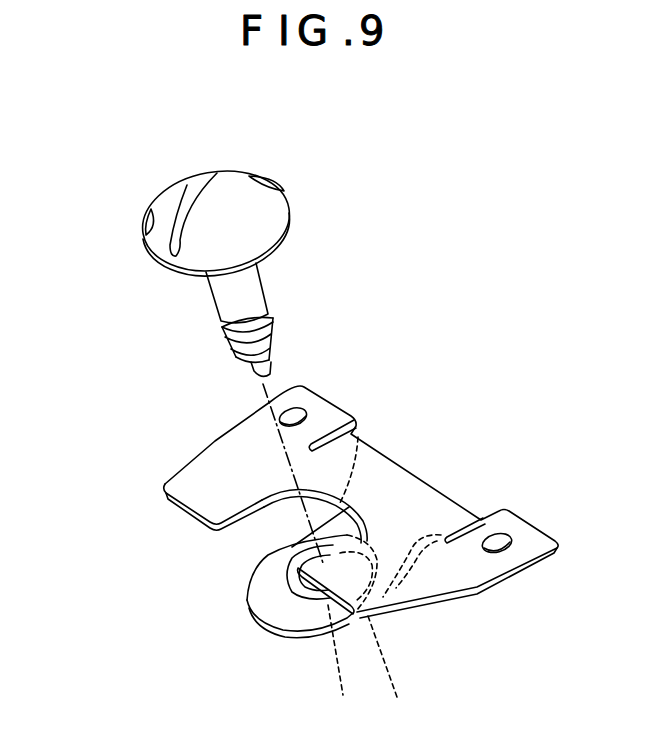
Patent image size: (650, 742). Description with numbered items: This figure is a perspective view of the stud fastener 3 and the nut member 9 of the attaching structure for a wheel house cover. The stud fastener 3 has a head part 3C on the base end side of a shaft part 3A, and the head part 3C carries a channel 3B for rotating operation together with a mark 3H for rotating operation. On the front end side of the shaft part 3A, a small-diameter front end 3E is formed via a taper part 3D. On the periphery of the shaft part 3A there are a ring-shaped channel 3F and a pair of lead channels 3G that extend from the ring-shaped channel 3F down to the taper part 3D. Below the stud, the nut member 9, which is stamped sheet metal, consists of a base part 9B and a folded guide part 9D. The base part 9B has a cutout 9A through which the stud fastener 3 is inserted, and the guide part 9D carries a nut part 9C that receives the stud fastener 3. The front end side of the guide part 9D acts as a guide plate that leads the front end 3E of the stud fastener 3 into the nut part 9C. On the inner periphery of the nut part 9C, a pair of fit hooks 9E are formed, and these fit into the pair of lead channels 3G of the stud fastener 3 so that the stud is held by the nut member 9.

The stud fastener 3 is at (228, 341).
The shaft part 3A is at (262, 276).
The channel for rotating operation 3B is at (192, 192).
The head part 3C is at (281, 183).
The taper part 3D is at (278, 363).
The front end 3E is at (252, 378).
The ring-shaped channel 3F is at (223, 328).
The lead channels 3G is at (273, 337).
The mark for rotating operation 3H is at (153, 210).
The nut member 9 is at (310, 554).
The cutout 9A is at (263, 510).
The base part 9B is at (193, 497).
The nut part 9C is at (290, 548).
The guide part 9D is at (263, 637).
The fit hooks 9E is at (345, 618).